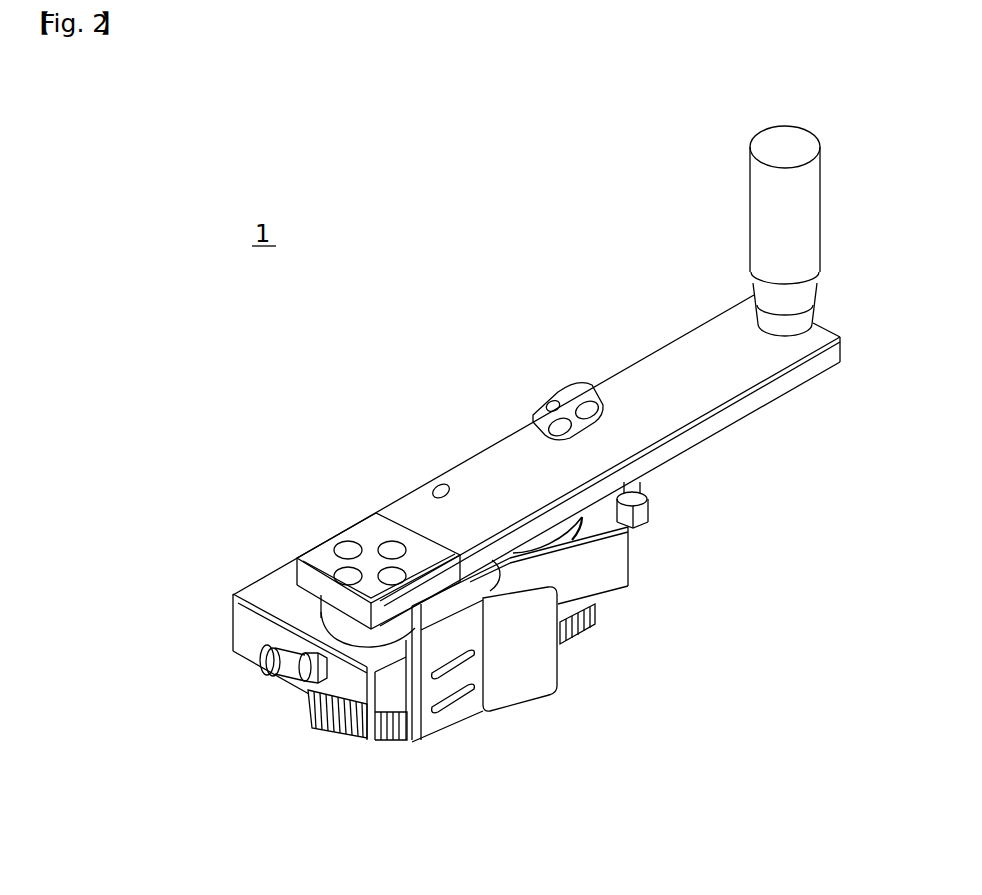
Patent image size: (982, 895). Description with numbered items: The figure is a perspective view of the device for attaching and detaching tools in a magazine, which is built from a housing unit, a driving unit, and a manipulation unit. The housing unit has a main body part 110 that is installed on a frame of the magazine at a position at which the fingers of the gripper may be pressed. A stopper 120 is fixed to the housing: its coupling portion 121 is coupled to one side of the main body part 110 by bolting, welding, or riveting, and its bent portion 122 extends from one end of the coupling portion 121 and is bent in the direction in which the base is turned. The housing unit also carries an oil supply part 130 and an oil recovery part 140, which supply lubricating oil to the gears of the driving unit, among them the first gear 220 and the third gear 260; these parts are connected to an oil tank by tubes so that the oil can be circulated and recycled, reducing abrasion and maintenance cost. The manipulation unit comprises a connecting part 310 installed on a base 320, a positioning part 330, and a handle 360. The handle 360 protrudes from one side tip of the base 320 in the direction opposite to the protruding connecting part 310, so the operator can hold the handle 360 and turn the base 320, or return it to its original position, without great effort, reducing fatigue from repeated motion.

The main body part 110 is at (248, 627).
The stopper 120 is at (520, 702).
The coupling portion 121 is at (446, 712).
The bent portion 122 is at (521, 686).
The oil supply part 130 is at (262, 673).
The oil recovery part 140 is at (324, 618).
The first gear 220 is at (585, 628).
The third gear 260 is at (340, 726).
The connecting part 310 is at (322, 627).
The base 320 is at (528, 457).
The positioning part 330 is at (652, 500).
The handle 360 is at (767, 188).